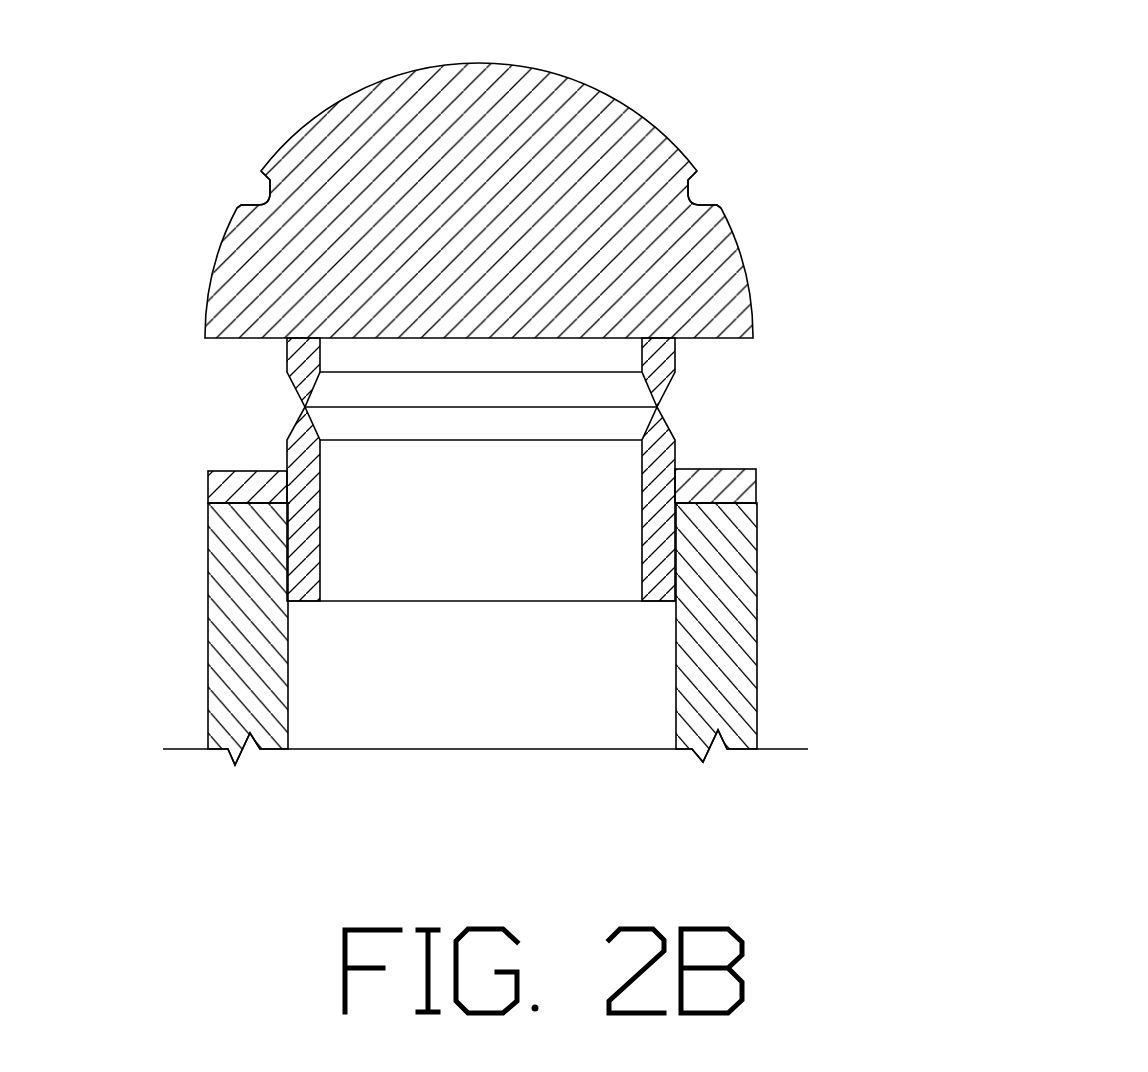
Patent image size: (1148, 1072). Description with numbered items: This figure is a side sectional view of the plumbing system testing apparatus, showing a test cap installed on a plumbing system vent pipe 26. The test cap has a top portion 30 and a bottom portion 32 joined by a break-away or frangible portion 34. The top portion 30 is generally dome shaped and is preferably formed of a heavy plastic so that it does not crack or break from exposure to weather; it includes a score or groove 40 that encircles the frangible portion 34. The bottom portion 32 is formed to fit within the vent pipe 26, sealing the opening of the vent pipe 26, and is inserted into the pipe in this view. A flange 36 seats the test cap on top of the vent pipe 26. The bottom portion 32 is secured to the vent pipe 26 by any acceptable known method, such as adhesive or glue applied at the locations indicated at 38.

The top portion 30 is at (510, 178).
The score or groove 40 is at (515, 179).
The frangible portion 34 is at (594, 469).
The flange 36 is at (462, 462).
The locations of adhesive or glue 38 is at (822, 573).
The plumbing system vent pipe 26 is at (492, 634).
The bottom portion 32 is at (532, 609).